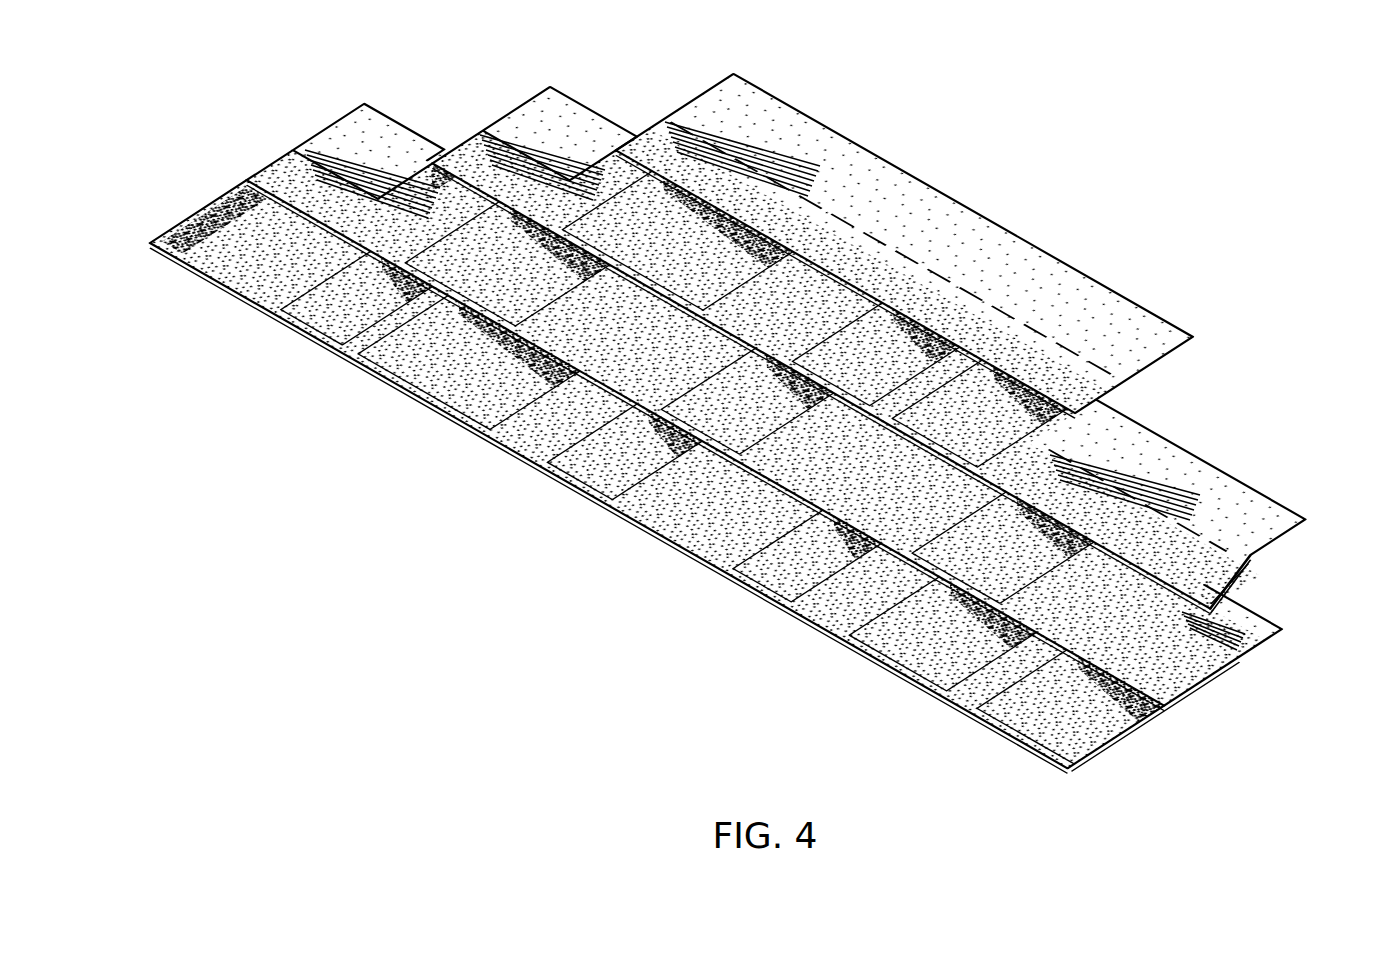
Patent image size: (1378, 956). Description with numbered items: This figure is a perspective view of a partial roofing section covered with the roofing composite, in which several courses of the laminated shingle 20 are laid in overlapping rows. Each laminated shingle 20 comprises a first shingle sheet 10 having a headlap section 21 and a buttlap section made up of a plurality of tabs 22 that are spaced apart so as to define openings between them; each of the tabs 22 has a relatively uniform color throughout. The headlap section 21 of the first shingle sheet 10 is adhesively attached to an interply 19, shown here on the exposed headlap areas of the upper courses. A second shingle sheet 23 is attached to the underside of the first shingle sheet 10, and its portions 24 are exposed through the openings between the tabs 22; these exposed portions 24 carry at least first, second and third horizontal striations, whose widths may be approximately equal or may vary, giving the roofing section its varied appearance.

The first shingle sheet 10 is at (1200, 572).
The interply 19 is at (1230, 643).
The laminated shingle 20 is at (1220, 673).
The headlap section 21 is at (1192, 692).
The tabs 22 is at (700, 528).
The second shingle sheet 23 is at (1113, 740).
The exposed portions 24 is at (785, 577).